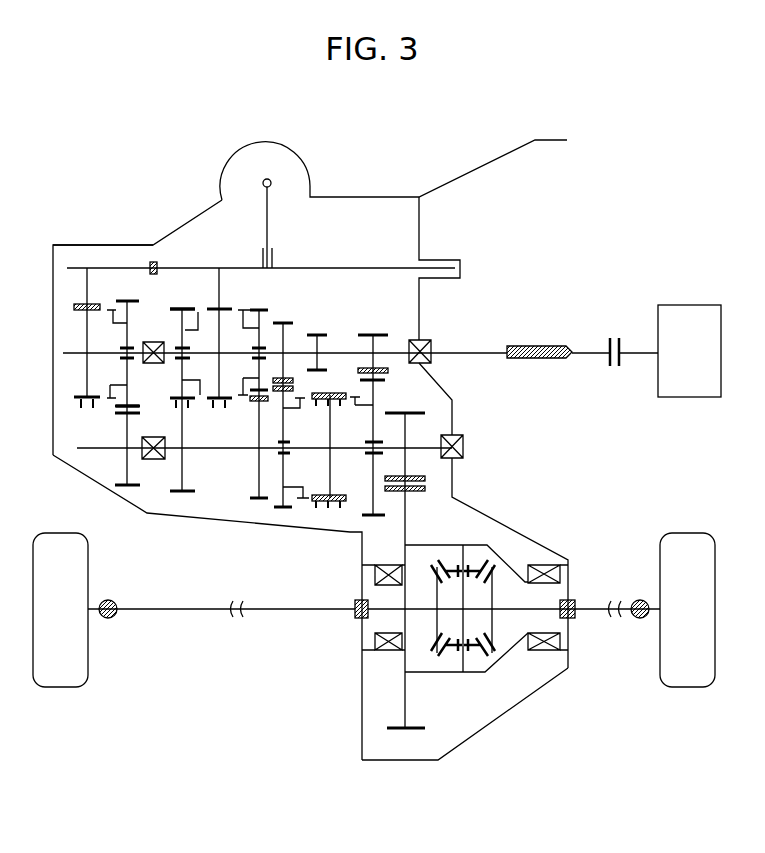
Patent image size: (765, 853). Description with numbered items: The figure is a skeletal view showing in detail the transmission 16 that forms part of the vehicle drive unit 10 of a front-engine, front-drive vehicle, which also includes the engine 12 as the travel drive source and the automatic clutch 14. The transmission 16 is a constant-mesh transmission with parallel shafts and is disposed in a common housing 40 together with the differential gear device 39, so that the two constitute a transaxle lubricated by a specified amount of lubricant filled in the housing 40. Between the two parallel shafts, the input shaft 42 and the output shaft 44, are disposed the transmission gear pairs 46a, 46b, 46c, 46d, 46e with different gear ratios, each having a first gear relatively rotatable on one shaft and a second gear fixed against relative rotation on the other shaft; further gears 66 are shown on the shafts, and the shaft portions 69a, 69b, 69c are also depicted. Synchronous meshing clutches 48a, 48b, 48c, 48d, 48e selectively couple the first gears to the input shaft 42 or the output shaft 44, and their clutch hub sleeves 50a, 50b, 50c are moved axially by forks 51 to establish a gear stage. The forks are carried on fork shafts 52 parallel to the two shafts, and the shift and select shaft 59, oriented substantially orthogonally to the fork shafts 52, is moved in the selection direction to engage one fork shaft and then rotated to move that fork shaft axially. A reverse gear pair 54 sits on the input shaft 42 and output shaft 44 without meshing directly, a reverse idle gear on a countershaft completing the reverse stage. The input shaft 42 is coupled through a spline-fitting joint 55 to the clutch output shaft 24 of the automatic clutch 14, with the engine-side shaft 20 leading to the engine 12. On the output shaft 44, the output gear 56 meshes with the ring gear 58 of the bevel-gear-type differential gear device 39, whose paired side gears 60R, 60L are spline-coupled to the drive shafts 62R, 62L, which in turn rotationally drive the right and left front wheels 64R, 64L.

The vehicle drive unit 10 is at (624, 146).
The engine 12 is at (673, 306).
The automatic clutch 14 is at (612, 340).
The transmission 16 is at (358, 230).
The engine output shaft 20 is at (640, 356).
The clutch output shaft 24 is at (582, 351).
The differential gear device 39 is at (475, 712).
The housing 40 is at (336, 196).
The input shaft 42 is at (468, 351).
The output shaft 44 is at (93, 452).
The transmission gear pair 46a is at (122, 294).
The transmission gear pair 46b is at (181, 500).
The transmission gear pair 46c is at (246, 508).
The transmission gear pair 46d is at (287, 318).
The transmission gear pair 46e is at (375, 330).
The synchronous meshing clutch 48a is at (95, 416).
The synchronous meshing clutch 48b is at (199, 298).
The synchronous meshing clutch 48c is at (243, 298).
The synchronous meshing clutch 48d is at (301, 510).
The synchronous meshing clutch 48e is at (351, 512).
The clutch hub sleeve 50a is at (80, 304).
The clutch hub sleeve 50b is at (216, 305).
The clutch hub sleeve 50c is at (338, 388).
The fork 51 is at (80, 286).
The fork shaft 52 is at (78, 266).
The reverse gear pair 54 is at (315, 328).
The spline-fitting joint 55 is at (537, 358).
The output gear 56 is at (418, 412).
The ring gear 58 is at (415, 733).
The shift and select shaft 59 is at (262, 181).
The side gear 60L is at (437, 619).
The side gear 60R is at (494, 586).
The drive shaft 62L is at (168, 614).
The drive shaft 62R is at (599, 614).
The front wheel 64L is at (64, 690).
The front wheel 64R is at (685, 690).
The gear 66 is at (137, 297).
The shaft 69a is at (77, 340).
The shaft 69b is at (228, 374).
The shaft 69c is at (343, 484).